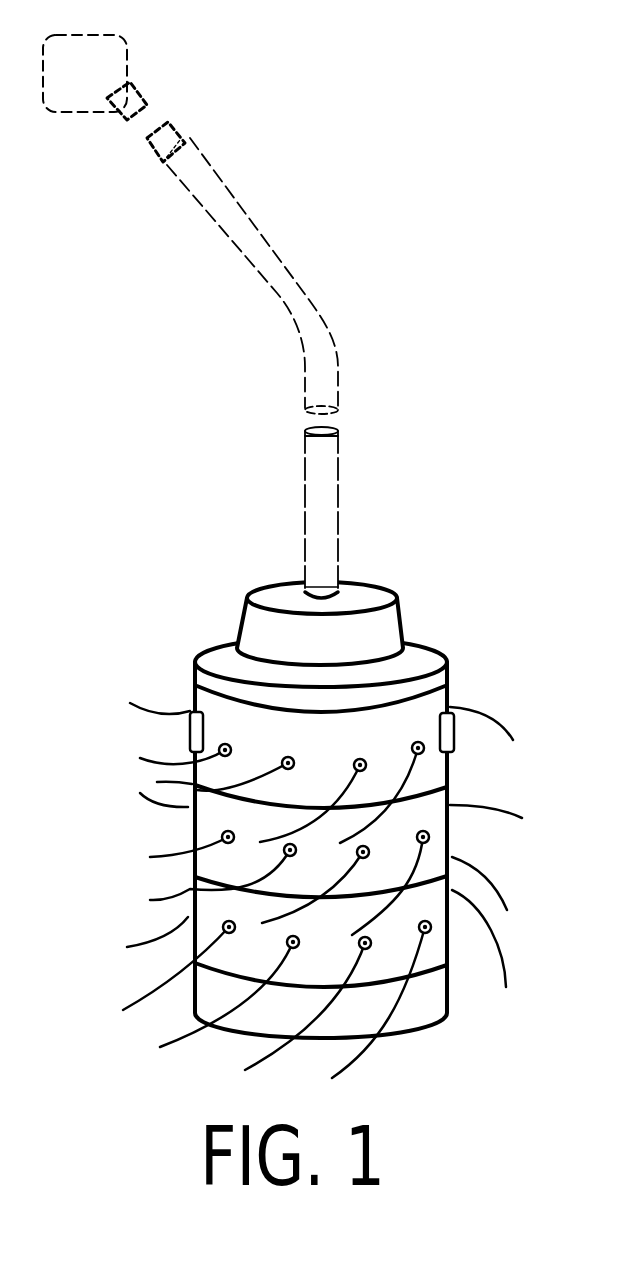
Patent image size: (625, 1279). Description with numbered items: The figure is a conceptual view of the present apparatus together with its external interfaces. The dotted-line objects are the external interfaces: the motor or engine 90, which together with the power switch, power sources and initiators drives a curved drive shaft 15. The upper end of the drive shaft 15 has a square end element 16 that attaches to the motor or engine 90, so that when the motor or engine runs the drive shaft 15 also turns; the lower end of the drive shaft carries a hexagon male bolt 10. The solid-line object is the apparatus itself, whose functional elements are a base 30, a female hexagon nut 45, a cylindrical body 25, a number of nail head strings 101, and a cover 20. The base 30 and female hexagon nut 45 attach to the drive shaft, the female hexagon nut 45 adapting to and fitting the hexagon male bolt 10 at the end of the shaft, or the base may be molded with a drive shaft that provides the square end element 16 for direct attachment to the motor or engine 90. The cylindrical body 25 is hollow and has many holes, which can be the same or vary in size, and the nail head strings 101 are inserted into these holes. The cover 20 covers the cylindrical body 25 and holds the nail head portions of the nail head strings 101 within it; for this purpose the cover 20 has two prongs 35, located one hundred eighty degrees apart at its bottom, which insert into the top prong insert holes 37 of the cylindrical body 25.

The hexagon male bolt 10 is at (258, 595).
The drive shaft 15 is at (277, 294).
The square end element 16 is at (167, 143).
The cover 20 is at (223, 998).
The cylindrical body 25 is at (207, 822).
The base 30 is at (320, 697).
The prongs 35 is at (253, 735).
The prong insert holes 37 is at (447, 732).
The female hexagon nut 45 is at (320, 628).
The motor or engine 90 is at (108, 77).
The nail head strings 101 is at (207, 843).